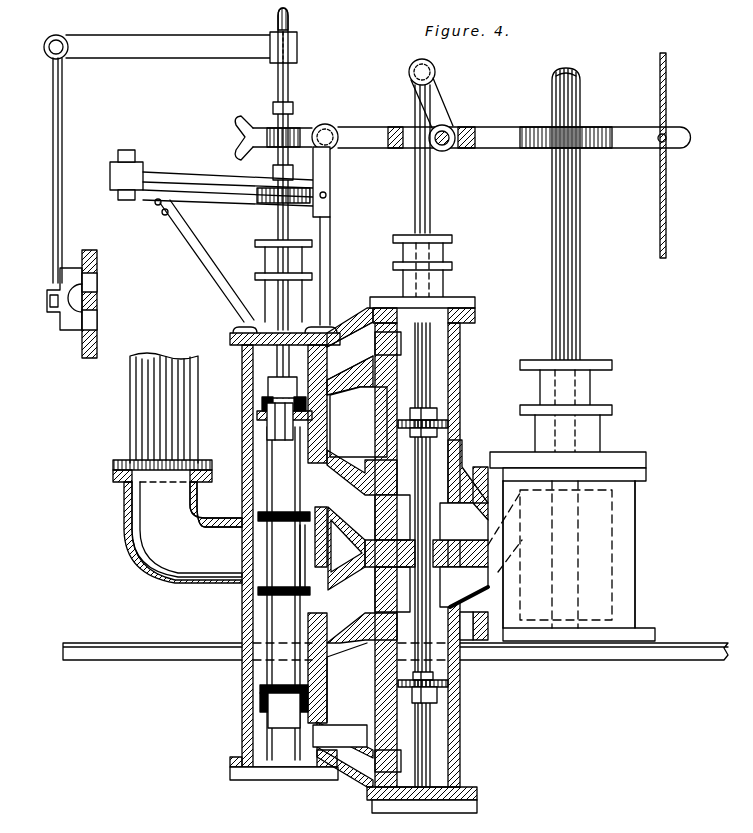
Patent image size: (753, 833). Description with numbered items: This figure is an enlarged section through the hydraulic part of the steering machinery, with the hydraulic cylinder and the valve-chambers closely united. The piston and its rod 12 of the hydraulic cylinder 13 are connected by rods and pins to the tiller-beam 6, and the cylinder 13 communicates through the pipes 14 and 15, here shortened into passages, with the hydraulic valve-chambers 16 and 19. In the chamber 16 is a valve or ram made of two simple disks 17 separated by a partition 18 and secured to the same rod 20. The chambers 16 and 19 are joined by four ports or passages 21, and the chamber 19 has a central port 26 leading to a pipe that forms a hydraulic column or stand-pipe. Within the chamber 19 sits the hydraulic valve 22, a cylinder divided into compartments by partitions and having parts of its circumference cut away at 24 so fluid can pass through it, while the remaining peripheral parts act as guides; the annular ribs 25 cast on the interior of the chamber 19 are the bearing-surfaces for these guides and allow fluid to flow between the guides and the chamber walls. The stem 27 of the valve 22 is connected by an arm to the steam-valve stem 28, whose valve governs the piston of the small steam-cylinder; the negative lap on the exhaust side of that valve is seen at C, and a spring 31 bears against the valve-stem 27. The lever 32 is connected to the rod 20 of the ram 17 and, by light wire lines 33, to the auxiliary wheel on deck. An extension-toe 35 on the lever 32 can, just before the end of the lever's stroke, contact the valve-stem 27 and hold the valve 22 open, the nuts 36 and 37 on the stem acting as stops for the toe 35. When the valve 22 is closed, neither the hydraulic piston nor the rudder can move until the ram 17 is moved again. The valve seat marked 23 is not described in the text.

The steam-valve stem 28 is at (45, 170).
The negative lap C is at (79, 299).
The valve-stem 27 is at (281, 169).
The nut 36 is at (293, 99).
The nut 37 is at (294, 163).
The extension-toe 35 is at (266, 128).
The lever 32 is at (501, 125).
The lines 33 is at (673, 155).
The rod 20 is at (424, 178).
The piston and rod 12 is at (571, 354).
The hydraulic cylinder 13 is at (569, 554).
The spring 31 is at (220, 236).
The annular ribs 25 is at (222, 712).
The port 21 is at (357, 547).
The valve-chamber 19 is at (356, 422).
The partition 18 is at (426, 553).
The valve-chamber 16 is at (427, 555).
The pipe 15 is at (464, 521).
The pipe 14 is at (464, 587).
The disk 17 is at (424, 555).
The hydraulic valve 22 is at (278, 552).
The cut-away part 24 is at (284, 411).
The valve seat 23 is at (306, 553).
The tiller-beam 6 is at (284, 706).
The central port 26 is at (177, 521).